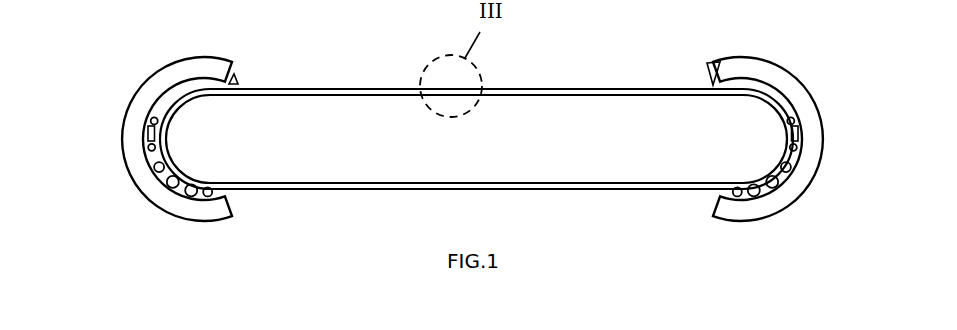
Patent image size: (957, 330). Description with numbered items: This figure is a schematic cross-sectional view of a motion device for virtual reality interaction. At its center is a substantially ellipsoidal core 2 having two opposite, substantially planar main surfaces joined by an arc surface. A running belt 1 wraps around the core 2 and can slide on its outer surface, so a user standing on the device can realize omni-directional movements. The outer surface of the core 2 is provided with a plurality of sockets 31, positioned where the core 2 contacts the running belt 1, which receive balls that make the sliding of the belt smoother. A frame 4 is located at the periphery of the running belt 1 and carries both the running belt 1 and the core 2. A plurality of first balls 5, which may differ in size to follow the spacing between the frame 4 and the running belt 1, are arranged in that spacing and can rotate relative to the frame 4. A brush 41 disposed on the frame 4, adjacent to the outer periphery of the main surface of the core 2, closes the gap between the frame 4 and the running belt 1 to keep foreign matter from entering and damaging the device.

The running belt 1 is at (757, 103).
The core 2 is at (748, 145).
The frame 4 is at (780, 78).
The brush 41 is at (551, 42).
The socket 31 is at (148, 138).
The first ball 5 is at (780, 182).